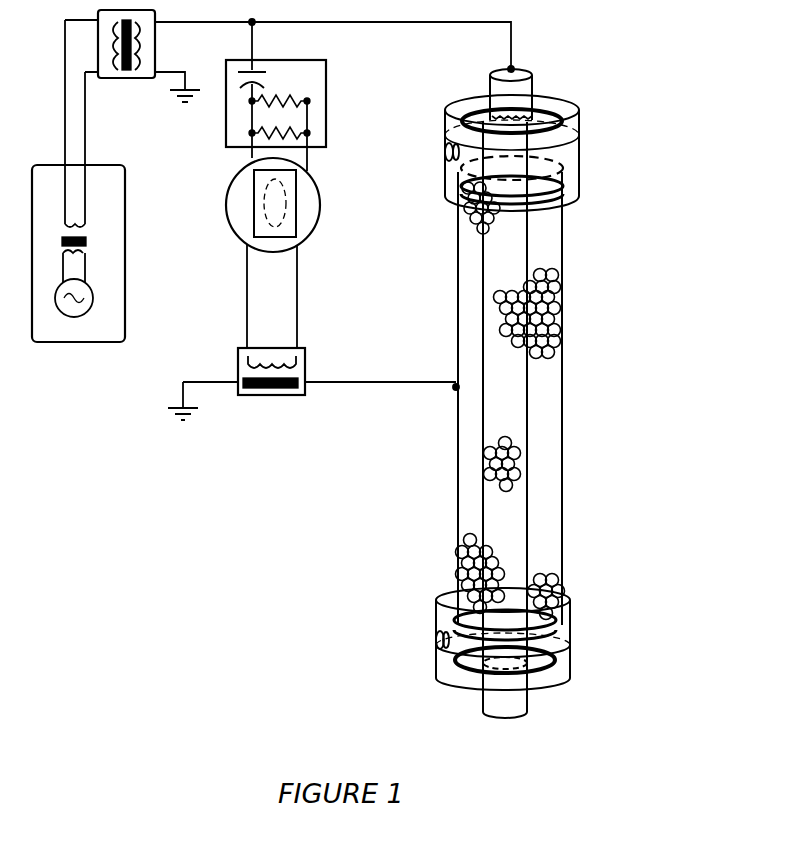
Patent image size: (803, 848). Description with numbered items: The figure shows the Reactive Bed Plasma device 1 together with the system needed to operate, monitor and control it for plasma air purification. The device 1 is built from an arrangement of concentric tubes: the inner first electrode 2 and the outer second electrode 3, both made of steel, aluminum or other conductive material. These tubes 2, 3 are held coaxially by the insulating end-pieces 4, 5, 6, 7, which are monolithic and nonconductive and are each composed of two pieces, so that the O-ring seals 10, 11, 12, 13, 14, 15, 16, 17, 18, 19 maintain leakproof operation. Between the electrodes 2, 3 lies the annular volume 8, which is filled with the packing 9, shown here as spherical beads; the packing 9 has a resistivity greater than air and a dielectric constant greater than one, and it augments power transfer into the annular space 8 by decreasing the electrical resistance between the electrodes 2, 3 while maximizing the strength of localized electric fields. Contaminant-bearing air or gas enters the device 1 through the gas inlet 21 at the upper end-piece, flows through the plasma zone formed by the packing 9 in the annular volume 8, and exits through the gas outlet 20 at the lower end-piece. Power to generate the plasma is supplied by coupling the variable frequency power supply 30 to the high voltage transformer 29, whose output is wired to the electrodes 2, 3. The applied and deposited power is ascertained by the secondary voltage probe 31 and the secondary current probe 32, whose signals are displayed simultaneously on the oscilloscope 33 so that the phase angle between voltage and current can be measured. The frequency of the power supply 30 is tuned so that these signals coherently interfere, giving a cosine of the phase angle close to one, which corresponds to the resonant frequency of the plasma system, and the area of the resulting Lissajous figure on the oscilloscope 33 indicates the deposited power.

The Reactive Bed Plasma device 1 is at (598, 335).
The first electrode 2 is at (482, 427).
The second electrode 3 is at (458, 256).
The insulating end-piece 4 is at (437, 617).
The insulating end-piece 5 is at (445, 190).
The insulating end-piece 6 is at (465, 695).
The insulating end-piece 7 is at (470, 96).
The annular volume 8 is at (465, 553).
The packing 9 is at (495, 297).
The O-ring seal 10 is at (508, 676).
The O-ring seal 11 is at (517, 120).
The O-ring seal 12 is at (560, 670).
The O-ring seal 13 is at (556, 118).
The O-ring seal 14 is at (555, 628).
The O-ring seal 15 is at (547, 172).
The O-ring seal 16 is at (565, 606).
The O-ring seal 17 is at (580, 188).
The O-ring seal 18 is at (447, 660).
The O-ring seal 19 is at (445, 150).
The gas outlet 20 is at (430, 640).
The gas inlet 21 is at (432, 158).
The high voltage transformer 29 is at (130, 78).
The power supply 30 is at (83, 342).
The voltage probe 31 is at (225, 140).
The current probe 32 is at (237, 362).
The oscilloscope 33 is at (228, 218).